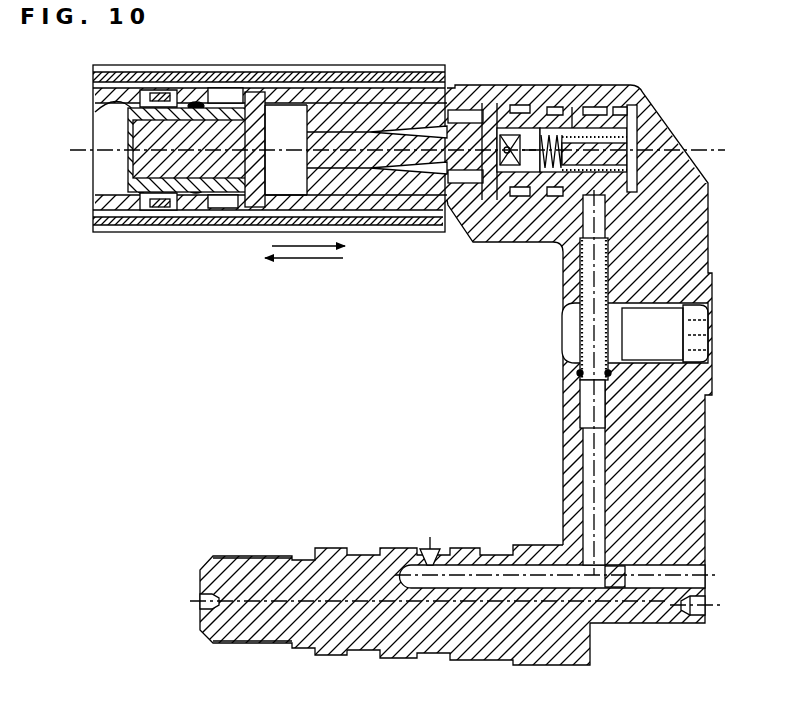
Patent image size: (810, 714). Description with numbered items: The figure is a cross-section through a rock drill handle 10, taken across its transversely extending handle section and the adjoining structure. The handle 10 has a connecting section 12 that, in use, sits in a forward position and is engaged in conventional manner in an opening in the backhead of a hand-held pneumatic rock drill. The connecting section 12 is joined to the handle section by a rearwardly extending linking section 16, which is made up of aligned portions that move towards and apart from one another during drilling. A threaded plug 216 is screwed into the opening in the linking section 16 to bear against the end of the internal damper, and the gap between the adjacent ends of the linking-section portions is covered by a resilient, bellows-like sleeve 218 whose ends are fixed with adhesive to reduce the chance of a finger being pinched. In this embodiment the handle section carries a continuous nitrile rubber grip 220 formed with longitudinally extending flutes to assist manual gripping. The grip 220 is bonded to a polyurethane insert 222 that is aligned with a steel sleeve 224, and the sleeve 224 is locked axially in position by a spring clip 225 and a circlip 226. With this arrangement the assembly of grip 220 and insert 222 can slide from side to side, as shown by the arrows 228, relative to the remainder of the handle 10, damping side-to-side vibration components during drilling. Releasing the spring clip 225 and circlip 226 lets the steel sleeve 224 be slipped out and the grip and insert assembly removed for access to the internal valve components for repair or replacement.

The handle 10 is at (418, 0).
The connecting section 12 is at (363, 538).
The linking section 16 is at (550, 445).
The threaded plug 216 is at (540, 0).
The bellows-like sleeve 218 is at (712, 290).
The nitrile rubber grip 220 is at (343, 88).
The polyurethane insert 222 is at (412, 68).
The steel sleeve 224 is at (287, 92).
The spring clip 225 is at (148, 92).
The circlip 226 is at (93, 105).
The arrows 228 is at (305, 270).